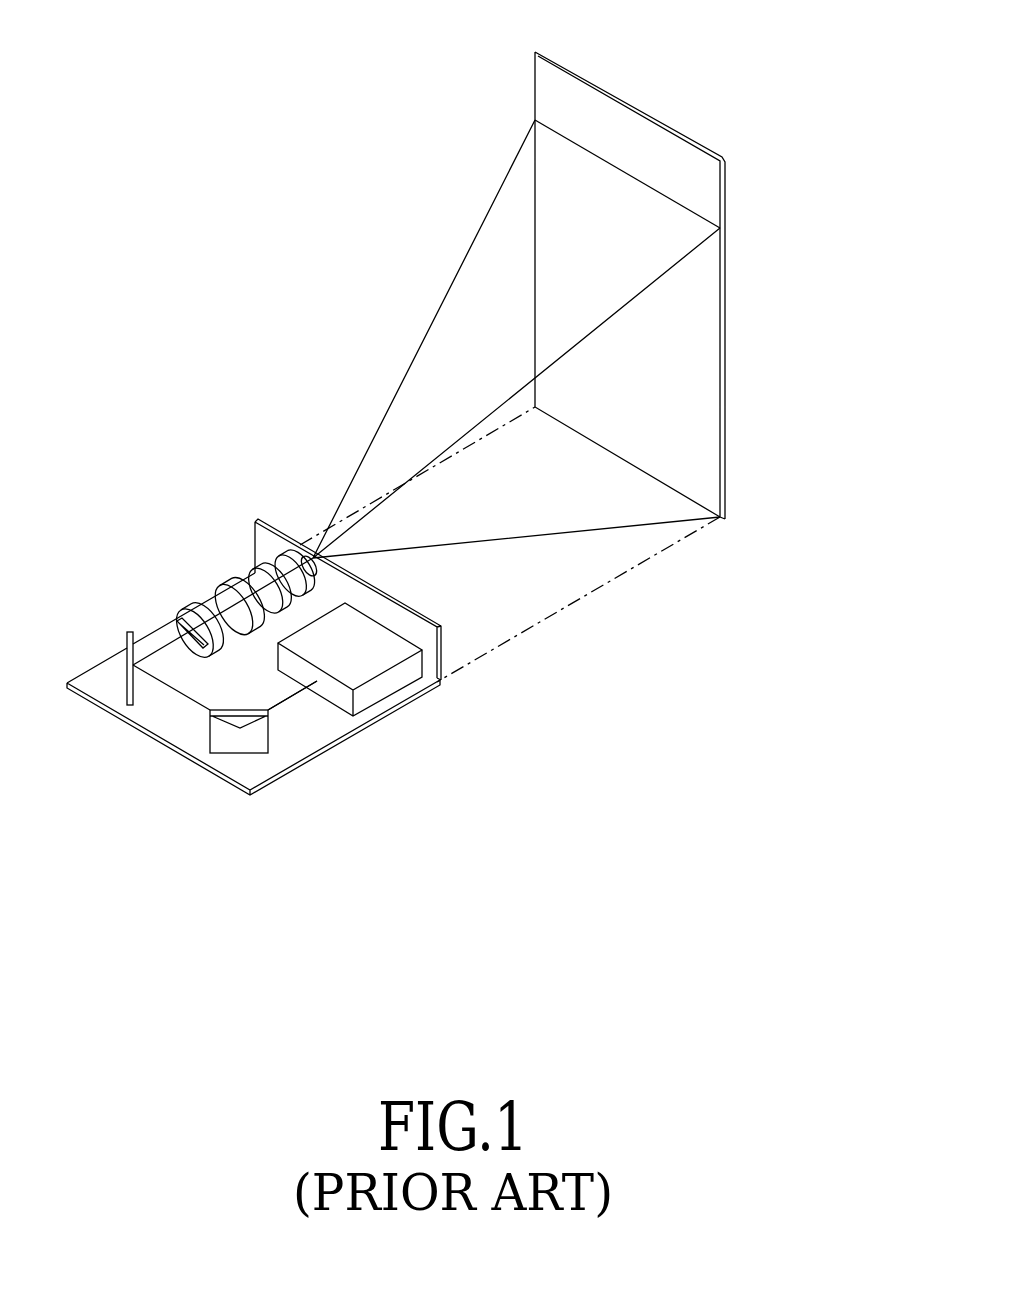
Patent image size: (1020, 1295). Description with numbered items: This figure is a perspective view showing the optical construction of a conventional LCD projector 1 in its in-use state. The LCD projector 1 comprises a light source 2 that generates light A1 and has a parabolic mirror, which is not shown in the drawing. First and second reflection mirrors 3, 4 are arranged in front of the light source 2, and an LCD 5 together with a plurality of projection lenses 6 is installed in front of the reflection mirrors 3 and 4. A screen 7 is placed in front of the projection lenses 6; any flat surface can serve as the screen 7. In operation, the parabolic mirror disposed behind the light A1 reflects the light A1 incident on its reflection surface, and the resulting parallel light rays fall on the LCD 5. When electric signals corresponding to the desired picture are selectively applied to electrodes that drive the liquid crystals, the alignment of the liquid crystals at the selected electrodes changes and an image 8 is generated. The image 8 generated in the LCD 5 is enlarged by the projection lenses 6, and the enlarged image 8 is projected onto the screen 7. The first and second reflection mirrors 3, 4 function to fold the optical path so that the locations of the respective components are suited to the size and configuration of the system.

The LCD projector 1 is at (166, 144).
The light source 2 is at (380, 680).
The first reflection mirror 3 is at (218, 732).
The second reflection mirror 4 is at (125, 692).
The LCD 5 is at (168, 623).
The projection lenses 6 is at (243, 559).
The screen 7 is at (643, 109).
The image 8 is at (450, 336).
The light A1 is at (288, 703).